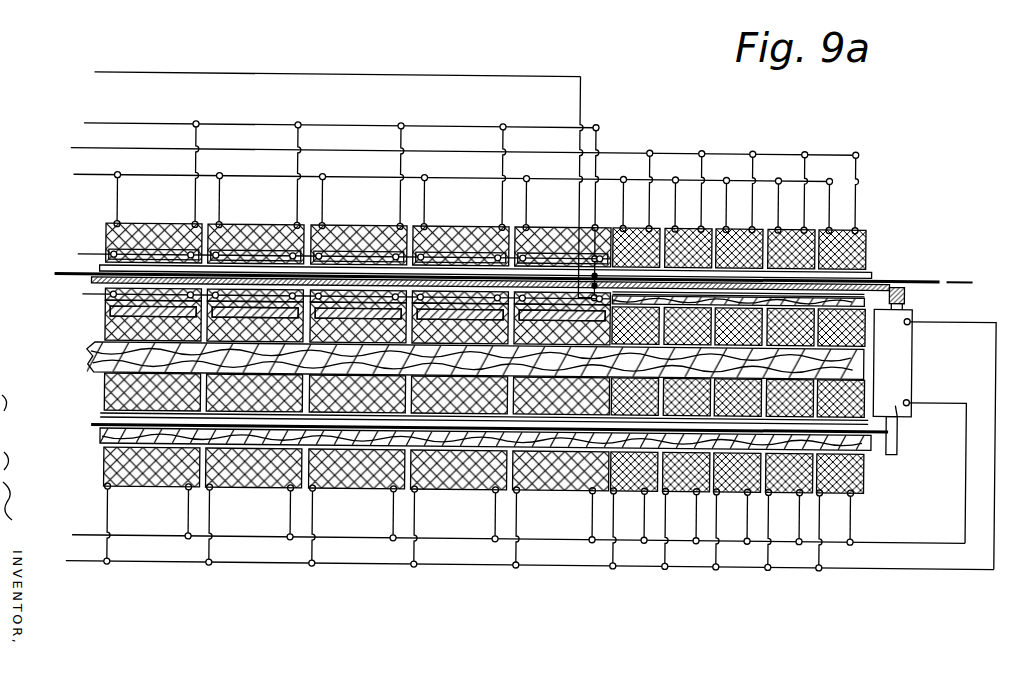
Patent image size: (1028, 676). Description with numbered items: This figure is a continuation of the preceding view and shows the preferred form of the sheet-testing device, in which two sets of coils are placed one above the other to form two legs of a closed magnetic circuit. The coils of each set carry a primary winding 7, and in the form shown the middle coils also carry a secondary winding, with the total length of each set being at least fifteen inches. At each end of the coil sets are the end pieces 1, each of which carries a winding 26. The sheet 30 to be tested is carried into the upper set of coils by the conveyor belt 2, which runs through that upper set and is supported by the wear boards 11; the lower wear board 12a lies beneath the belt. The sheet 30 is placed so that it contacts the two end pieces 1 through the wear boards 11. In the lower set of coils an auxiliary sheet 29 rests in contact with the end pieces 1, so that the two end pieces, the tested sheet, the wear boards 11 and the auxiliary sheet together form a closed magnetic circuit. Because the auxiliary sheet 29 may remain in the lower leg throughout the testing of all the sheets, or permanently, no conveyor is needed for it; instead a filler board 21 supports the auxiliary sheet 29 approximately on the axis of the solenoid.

The primary winding 7 is at (150, 221).
The lower wear board 12a is at (867, 265).
The sheet to be tested 30 is at (65, 264).
The end piece 1 is at (959, 261).
The conveyor belt 2 is at (921, 274).
The wear boards 11 is at (907, 292).
The auxiliary sheet 29 is at (899, 426).
The winding on end piece 26 is at (901, 441).
The filler board 21 is at (871, 446).